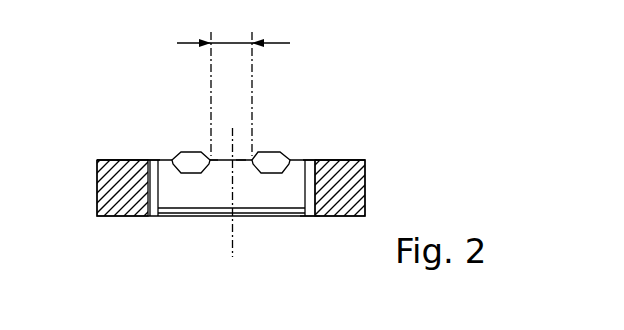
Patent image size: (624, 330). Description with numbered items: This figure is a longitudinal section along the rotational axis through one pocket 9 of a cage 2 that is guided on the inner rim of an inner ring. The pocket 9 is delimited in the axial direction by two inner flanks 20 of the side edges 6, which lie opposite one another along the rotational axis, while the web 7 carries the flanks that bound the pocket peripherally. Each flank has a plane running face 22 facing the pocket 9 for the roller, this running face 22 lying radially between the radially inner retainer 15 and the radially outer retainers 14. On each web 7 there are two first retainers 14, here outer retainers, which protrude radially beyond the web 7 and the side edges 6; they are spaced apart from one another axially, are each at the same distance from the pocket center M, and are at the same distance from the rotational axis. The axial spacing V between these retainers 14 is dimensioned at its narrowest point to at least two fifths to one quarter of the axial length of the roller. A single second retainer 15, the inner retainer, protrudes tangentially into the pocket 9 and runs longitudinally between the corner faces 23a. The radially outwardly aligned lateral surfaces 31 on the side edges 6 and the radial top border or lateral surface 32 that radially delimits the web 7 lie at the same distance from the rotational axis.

The cage 2 is at (351, 50).
The side edges 6 is at (118, 190).
The web 7 is at (203, 212).
The pocket 9 is at (240, 168).
The first retainers 14 is at (183, 152).
The second retainer 15 is at (181, 214).
The inner flanks 20 is at (156, 216).
The running face 22 is at (310, 216).
The corner faces 23a is at (150, 159).
The lateral surfaces 31 is at (117, 160).
The lateral surface 32 is at (216, 156).
The pocket center M is at (235, 247).
The axial spacing V is at (233, 84).